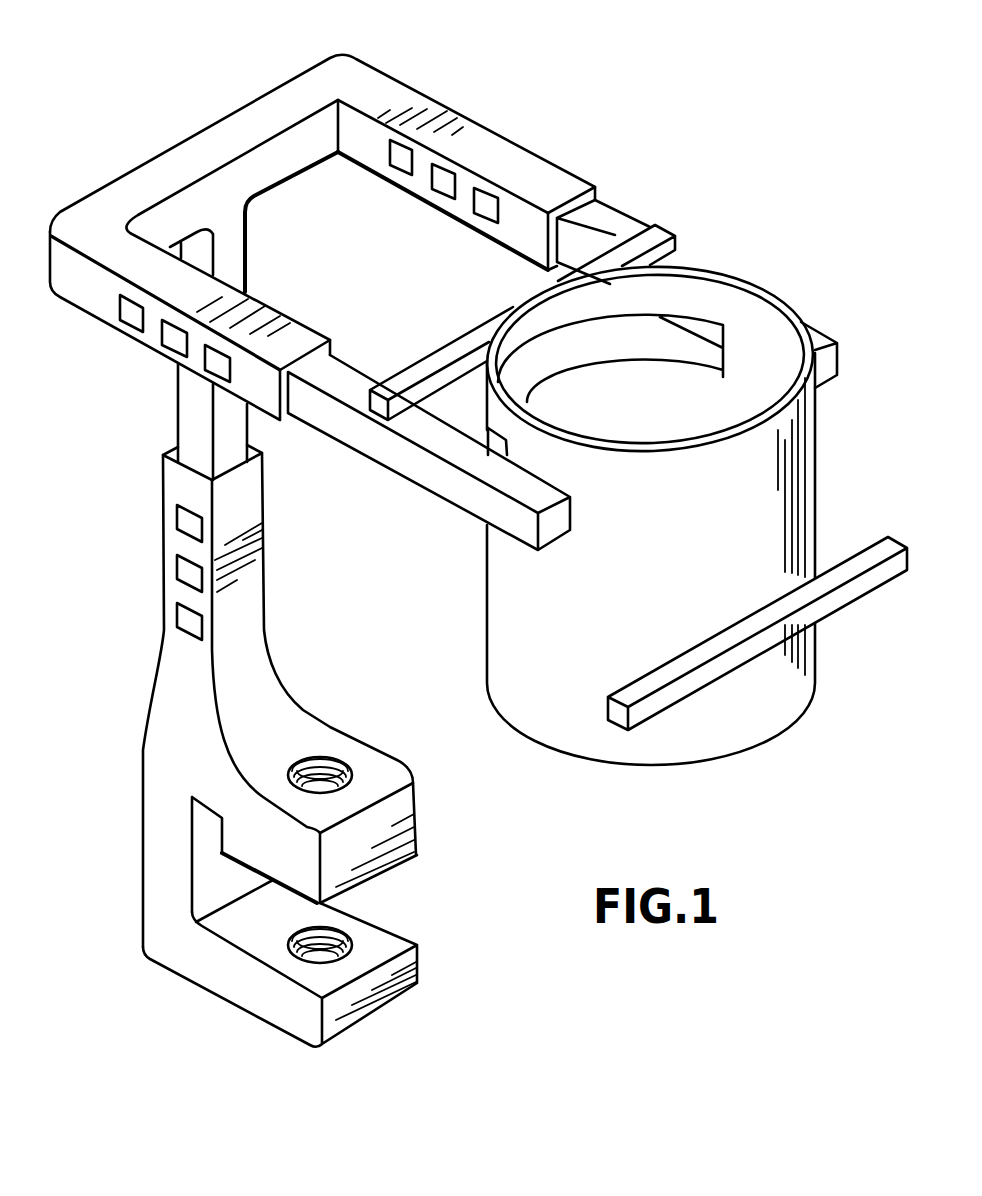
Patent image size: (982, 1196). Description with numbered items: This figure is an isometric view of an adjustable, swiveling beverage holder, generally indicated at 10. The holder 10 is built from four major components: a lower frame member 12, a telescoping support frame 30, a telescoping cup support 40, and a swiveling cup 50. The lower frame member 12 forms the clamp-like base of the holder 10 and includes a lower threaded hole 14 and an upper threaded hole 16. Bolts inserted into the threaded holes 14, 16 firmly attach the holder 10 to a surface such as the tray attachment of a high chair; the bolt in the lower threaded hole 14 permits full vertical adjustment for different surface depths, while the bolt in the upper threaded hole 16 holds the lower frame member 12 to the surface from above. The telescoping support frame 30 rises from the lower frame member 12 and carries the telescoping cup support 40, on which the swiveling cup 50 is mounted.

The swiveling beverage holder 10 is at (100, 84).
The lower frame member 12 is at (143, 858).
The lower threaded hole 14 is at (330, 943).
The upper threaded hole 16 is at (328, 768).
The telescoping support frame 30 is at (228, 128).
The telescoping cup support 40 is at (614, 228).
The swiveling cup 50 is at (820, 452).